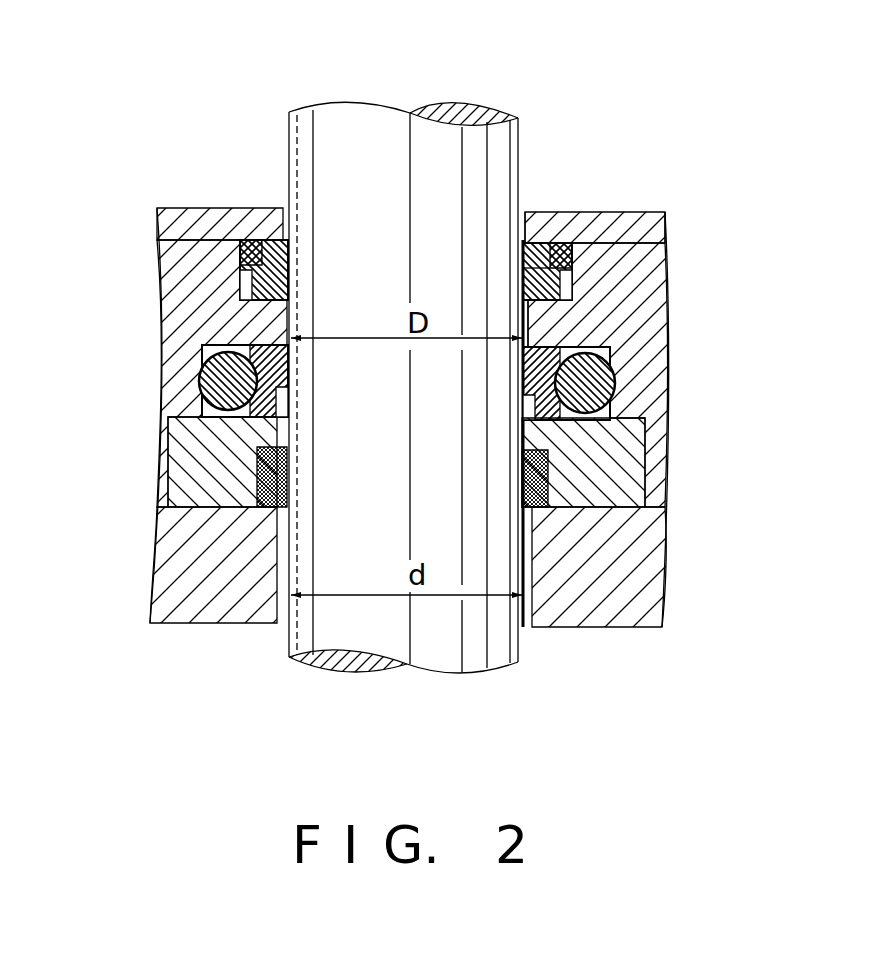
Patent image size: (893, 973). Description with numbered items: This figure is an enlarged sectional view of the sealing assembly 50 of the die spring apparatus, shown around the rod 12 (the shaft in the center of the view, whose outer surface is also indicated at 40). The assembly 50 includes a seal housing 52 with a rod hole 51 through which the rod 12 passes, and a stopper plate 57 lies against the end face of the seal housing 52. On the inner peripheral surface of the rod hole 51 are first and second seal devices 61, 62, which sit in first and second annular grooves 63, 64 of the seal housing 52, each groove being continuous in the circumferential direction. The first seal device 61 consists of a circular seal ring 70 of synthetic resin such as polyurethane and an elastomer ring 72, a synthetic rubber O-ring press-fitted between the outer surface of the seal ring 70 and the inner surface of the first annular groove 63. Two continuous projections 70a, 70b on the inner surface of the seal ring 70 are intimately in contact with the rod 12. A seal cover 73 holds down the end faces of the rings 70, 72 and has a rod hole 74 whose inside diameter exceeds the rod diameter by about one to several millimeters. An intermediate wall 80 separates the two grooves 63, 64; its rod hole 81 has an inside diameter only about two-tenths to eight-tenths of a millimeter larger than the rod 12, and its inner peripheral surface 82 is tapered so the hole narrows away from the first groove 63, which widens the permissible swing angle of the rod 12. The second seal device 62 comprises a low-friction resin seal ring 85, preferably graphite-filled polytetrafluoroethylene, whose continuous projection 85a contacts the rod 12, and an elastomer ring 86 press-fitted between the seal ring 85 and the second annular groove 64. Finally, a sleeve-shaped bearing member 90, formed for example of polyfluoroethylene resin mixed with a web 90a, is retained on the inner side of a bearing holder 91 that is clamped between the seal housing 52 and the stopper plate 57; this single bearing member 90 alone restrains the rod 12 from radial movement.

The rod 12 is at (522, 137).
The shaft 40 is at (367, 117).
The sealing assembly 50 is at (211, 153).
The rod hole 51 is at (307, 243).
The seal housing 52 is at (172, 317).
The stopper plate 57 is at (165, 530).
The first seal device 61 is at (243, 253).
The second seal device 62 is at (206, 400).
The first annular groove 63 is at (238, 290).
The second annular groove 64 is at (212, 338).
The seal ring 70 is at (560, 214).
The projection 70a is at (522, 258).
The projection 70b is at (522, 287).
The elastomer ring 72 is at (605, 225).
The seal cover 73 is at (665, 223).
The rod hole 74 is at (525, 212).
The intermediate wall 80 is at (547, 318).
The rod hole 81 is at (522, 355).
The inner peripheral surface 82 is at (523, 318).
The seal ring 85 is at (612, 402).
The projection 85a is at (523, 395).
The elastomer ring 86 is at (600, 381).
The bearing member 90 is at (548, 485).
The web 90a is at (288, 487).
The bearing holder 91 is at (635, 450).